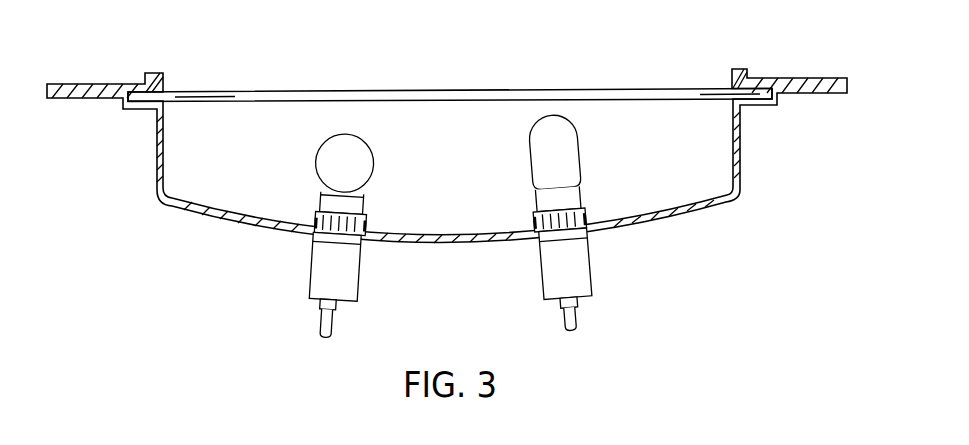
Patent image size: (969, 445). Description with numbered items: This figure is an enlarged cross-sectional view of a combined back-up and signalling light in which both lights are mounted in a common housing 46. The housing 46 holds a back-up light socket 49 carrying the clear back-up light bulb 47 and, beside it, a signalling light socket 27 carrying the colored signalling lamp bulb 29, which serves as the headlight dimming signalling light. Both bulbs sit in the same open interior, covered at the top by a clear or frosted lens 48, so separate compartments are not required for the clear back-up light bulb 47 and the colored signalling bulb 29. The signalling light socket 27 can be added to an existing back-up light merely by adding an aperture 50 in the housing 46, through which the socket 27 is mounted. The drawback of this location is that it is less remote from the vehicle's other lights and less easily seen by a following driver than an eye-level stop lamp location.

The housing 46 is at (663, 218).
The lens 48 is at (413, 92).
The back-up light bulb 47 is at (373, 155).
The back-up light socket 49 is at (312, 260).
The signalling lamp bulb 29 is at (575, 157).
The signalling light socket 27 is at (545, 268).
The aperture 50 is at (588, 229).